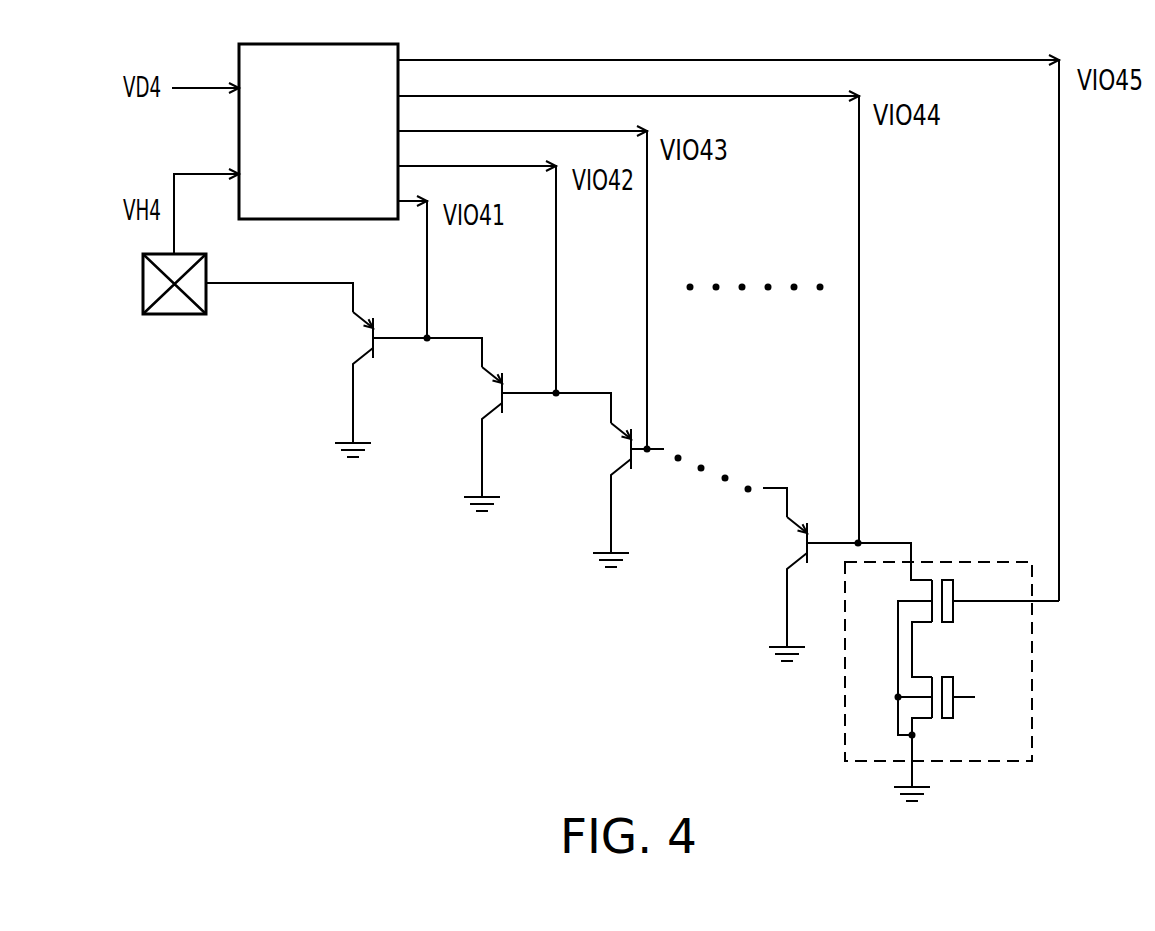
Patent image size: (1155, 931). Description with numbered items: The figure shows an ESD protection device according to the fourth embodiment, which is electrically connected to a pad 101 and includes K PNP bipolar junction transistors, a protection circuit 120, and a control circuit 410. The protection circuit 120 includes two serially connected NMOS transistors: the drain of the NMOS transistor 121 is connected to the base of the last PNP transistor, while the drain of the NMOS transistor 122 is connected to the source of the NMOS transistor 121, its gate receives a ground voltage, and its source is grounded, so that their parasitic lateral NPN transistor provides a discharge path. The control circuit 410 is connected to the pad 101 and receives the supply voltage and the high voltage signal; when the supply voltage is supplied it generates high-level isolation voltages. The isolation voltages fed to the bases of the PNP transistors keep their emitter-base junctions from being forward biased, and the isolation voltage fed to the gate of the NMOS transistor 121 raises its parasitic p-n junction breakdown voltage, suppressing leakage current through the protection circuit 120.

The control circuit 410 is at (297, 219).
The pad 101 is at (173, 316).
The protection circuit 120 is at (954, 689).
The NMOS transistor 121 is at (995, 618).
The NMOS transistor 122 is at (953, 715).